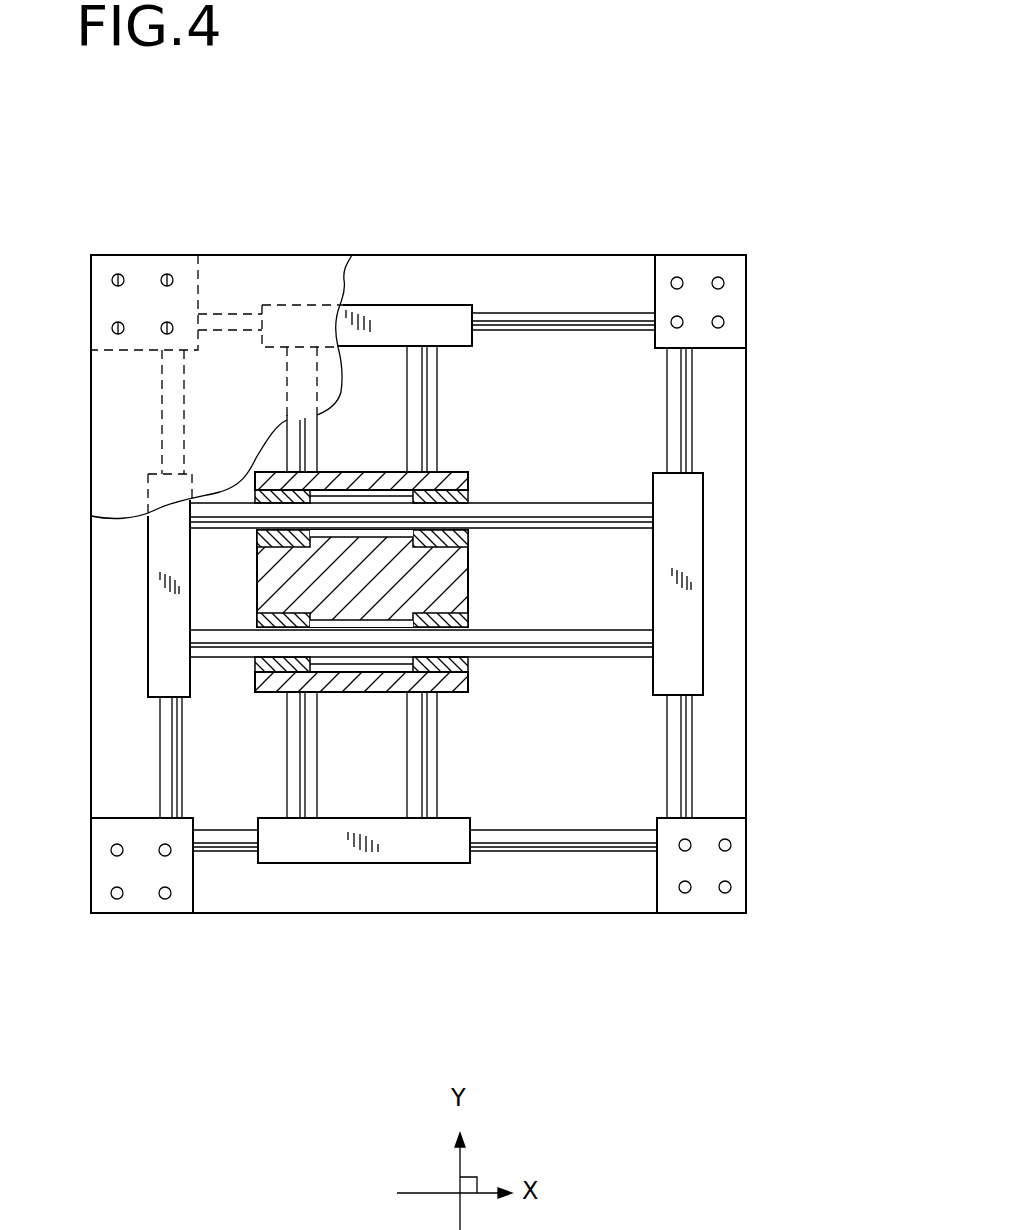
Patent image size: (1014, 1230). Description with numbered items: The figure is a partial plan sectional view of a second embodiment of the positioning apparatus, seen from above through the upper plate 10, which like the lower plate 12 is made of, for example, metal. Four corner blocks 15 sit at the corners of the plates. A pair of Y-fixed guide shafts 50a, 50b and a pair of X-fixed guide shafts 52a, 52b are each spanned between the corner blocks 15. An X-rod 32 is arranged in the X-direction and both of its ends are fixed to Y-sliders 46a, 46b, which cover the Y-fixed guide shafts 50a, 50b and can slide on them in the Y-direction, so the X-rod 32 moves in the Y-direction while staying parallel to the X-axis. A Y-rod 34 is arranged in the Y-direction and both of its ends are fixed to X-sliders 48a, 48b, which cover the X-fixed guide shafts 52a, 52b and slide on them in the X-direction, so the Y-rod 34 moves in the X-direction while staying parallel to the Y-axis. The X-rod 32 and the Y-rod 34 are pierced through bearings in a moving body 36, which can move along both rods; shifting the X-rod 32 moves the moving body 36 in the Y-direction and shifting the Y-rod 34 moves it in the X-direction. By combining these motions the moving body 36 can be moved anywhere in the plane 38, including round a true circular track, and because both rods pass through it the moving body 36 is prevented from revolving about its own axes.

The upper plate 10 is at (124, 410).
The lower plate 12 is at (338, 913).
The corner blocks 15 is at (203, 290).
The X-rod 32 is at (595, 503).
The Y-rod 34 is at (317, 447).
The moving body 36 is at (468, 463).
The plane 38 is at (761, 596).
The Y-slider 46a is at (687, 563).
The Y-slider 46b is at (160, 642).
The X-slider 48a is at (432, 322).
The X-slider 48b is at (434, 857).
The Y-fixed guide shaft 50a is at (693, 733).
The Y-fixed guide shaft 50b is at (162, 765).
The X-fixed guide shaft 52a is at (625, 315).
The X-fixed guide shaft 52b is at (535, 835).